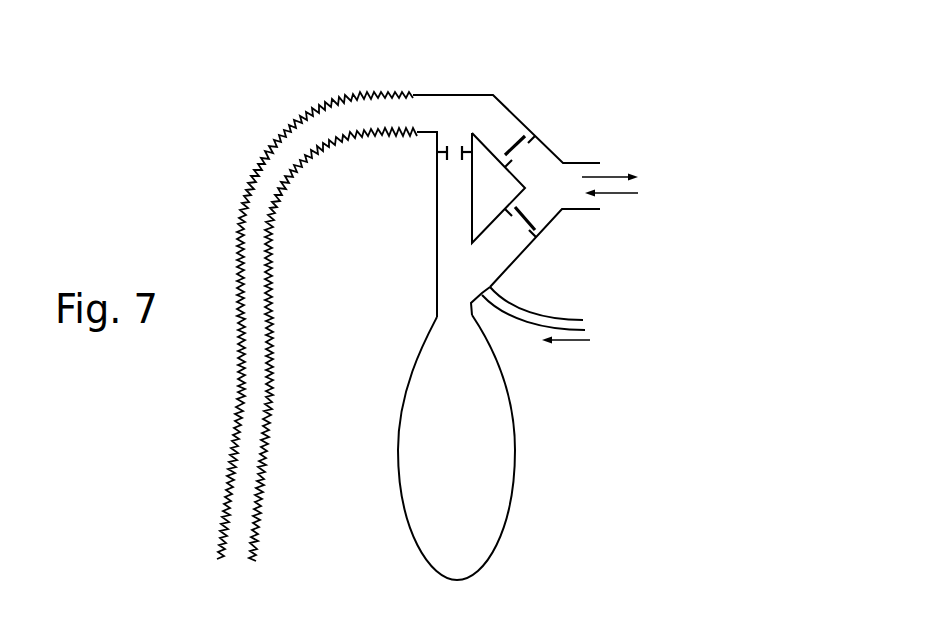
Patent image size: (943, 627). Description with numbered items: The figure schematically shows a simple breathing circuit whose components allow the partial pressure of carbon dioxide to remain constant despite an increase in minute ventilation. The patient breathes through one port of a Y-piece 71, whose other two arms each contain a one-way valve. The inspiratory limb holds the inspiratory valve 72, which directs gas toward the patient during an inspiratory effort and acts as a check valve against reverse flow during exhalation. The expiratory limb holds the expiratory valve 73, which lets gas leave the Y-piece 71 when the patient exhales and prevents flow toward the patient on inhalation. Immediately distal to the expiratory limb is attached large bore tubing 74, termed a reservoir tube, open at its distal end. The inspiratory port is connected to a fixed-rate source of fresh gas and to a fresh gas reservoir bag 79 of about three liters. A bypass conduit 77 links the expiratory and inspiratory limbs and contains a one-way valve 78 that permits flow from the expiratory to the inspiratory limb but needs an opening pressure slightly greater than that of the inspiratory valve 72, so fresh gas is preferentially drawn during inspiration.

The Y-piece 71 is at (560, 133).
The inspiratory valve 72 is at (553, 240).
The expiratory valve 73 is at (525, 98).
The large bore tubing 74 is at (254, 135).
The bypass conduit 77 is at (434, 225).
The one-way valve 78 is at (434, 157).
The fresh gas reservoir bag 79 is at (496, 439).